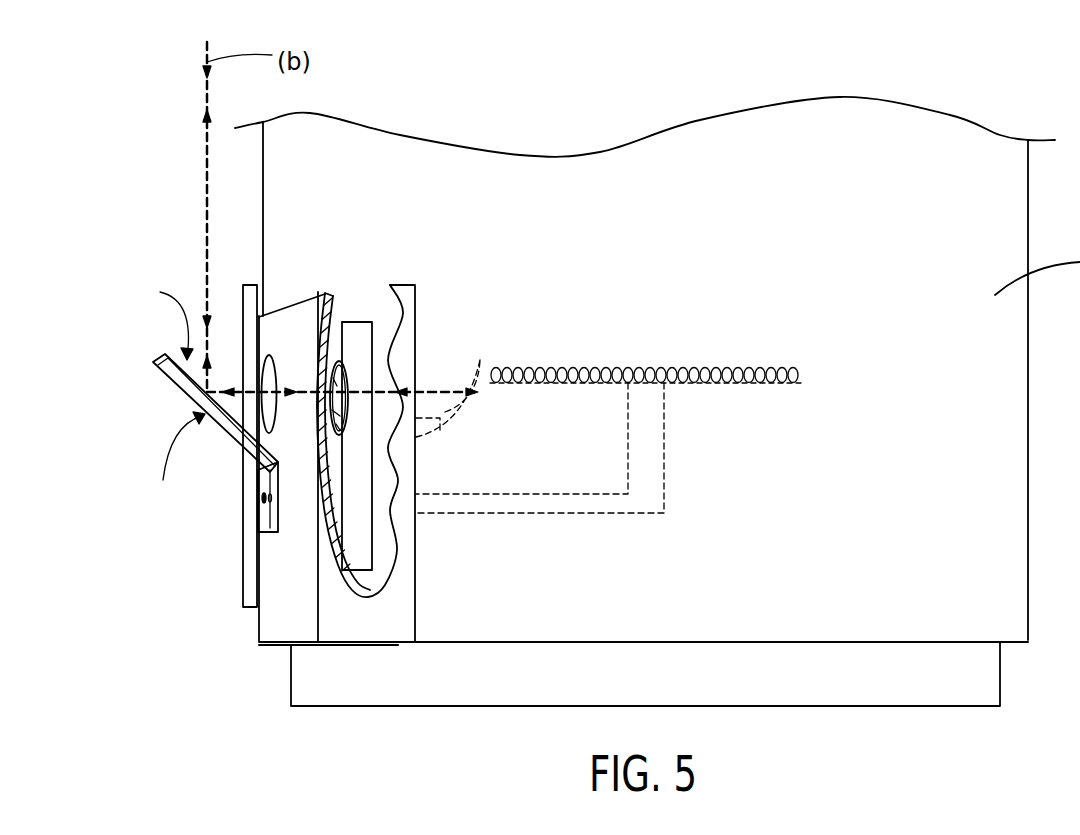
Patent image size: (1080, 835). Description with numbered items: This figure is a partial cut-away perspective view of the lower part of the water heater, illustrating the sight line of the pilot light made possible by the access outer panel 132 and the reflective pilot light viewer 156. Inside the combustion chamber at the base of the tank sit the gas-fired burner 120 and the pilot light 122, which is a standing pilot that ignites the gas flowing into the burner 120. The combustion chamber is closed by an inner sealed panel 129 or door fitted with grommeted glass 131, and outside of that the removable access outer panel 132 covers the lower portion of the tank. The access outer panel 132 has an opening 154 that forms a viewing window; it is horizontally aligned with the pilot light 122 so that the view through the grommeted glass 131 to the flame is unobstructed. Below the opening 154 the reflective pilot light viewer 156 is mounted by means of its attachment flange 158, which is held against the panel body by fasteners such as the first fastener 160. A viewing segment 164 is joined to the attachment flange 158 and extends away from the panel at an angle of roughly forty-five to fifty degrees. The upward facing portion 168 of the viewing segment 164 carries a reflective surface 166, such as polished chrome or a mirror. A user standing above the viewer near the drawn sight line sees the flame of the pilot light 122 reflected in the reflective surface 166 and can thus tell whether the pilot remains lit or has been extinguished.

The gas-fired burner 120 is at (689, 370).
The pilot light 122 is at (465, 408).
The inner sealed panel 129 is at (357, 545).
The grommeted glass 131 is at (337, 398).
The access outer panel 132 is at (275, 615).
The opening 154 is at (274, 368).
The reflective pilot light viewer 156 is at (174, 463).
The attachment flange 158 is at (265, 520).
The first fastener 160 is at (260, 498).
The viewing segment 164 is at (173, 380).
The reflective surface 166 is at (156, 317).
The portion of the viewing segment 168 is at (180, 355).